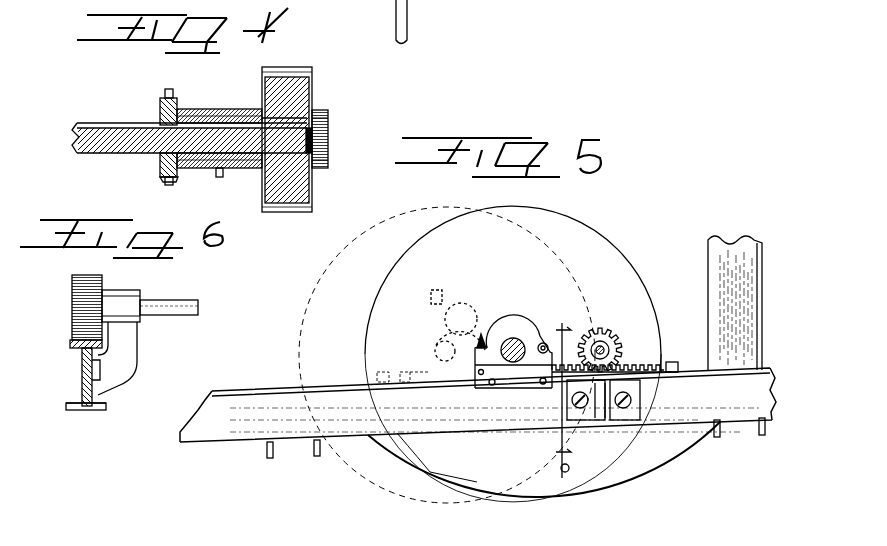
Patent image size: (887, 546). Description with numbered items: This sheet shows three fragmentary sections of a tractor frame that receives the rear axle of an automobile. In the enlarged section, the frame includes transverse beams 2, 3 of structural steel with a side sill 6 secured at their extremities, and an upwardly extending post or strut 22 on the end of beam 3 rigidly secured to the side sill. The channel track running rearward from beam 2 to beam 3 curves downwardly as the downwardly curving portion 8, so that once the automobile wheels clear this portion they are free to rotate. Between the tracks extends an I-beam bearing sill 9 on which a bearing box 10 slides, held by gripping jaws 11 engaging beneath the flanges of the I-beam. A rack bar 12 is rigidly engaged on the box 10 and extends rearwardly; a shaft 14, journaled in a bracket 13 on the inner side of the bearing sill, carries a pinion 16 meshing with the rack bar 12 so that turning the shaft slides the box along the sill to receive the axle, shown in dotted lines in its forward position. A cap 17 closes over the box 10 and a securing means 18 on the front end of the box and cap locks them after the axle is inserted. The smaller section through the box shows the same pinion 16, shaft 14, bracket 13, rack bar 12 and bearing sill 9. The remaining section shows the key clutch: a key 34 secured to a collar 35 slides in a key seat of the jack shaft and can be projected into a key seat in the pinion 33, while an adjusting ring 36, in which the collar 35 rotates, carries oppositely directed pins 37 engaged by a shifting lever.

In FIG. 5, the transverse beam 2 is at (305, 440).
In FIG. 5, the transverse beam 3 is at (762, 437).
In FIG. 5, the side sill 6 is at (561, 390).
In FIG. 5, the downwardly curving channel portion 8 is at (662, 445).
In FIG. 6, the bearing sill 9 is at (85, 410).
In FIG. 5, the bearing sill 9 is at (408, 408).
In FIG. 5, the bearing box 10 is at (530, 366).
In FIG. 5, the gripping jaws 11 is at (550, 370).
In FIG. 6, the rack bar 12 is at (78, 350).
In FIG. 5, the rack bar 12 is at (667, 365).
In FIG. 6, the bracket 13 is at (140, 366).
In FIG. 5, the bracket 13 is at (623, 410).
In FIG. 6, the shaft 14 is at (165, 308).
In FIG. 5, the shaft 14 is at (603, 348).
In FIG. 6, the pinion 16 is at (72, 306).
In FIG. 5, the pinion 16 is at (615, 345).
In FIG. 5, the cap 17 is at (525, 332).
In FIG. 5, the securing means 18 is at (480, 345).
In FIG. 5, the post or strut 22 is at (742, 275).
In FIG. 4, the pinion 33 is at (300, 108).
In FIG. 4, the key 34 is at (207, 123).
In FIG. 4, the collar 35 is at (160, 115).
In FIG. 4, the adjusting ring 36 is at (162, 173).
In FIG. 4, the pins 37 is at (182, 84).